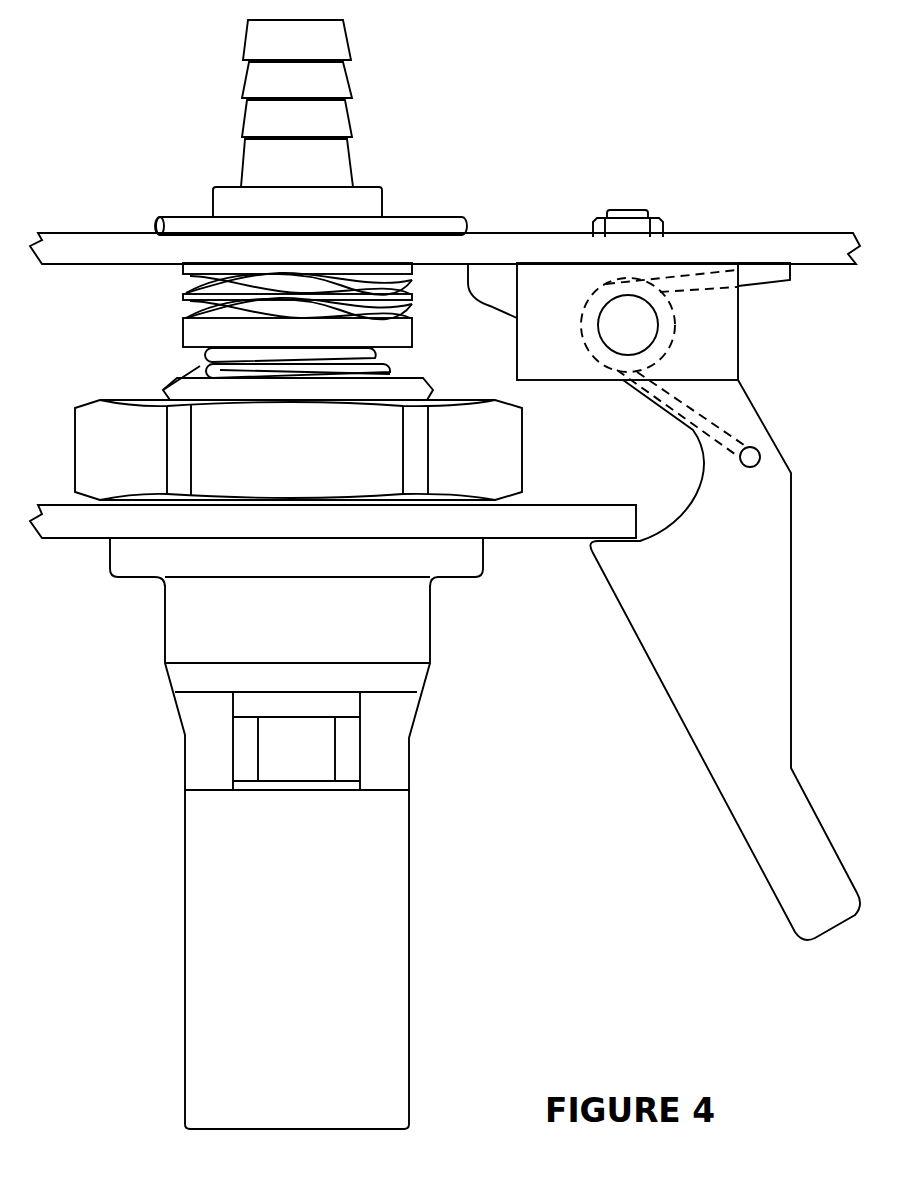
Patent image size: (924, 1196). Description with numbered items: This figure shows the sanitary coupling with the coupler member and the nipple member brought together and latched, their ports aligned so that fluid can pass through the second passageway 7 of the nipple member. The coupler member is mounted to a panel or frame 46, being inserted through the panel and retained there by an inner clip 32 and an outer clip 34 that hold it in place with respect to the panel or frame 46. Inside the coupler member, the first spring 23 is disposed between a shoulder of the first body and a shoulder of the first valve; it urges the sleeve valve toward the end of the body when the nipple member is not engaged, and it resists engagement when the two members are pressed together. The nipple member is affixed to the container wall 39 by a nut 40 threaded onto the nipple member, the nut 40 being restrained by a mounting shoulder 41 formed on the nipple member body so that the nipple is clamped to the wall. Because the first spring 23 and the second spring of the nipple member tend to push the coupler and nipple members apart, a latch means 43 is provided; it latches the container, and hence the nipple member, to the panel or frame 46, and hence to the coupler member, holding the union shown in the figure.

The second passageway 7 is at (210, 752).
The first spring 23 is at (210, 353).
The inner clip 32 is at (417, 263).
The outer clip 34 is at (170, 220).
The container wall 39 is at (612, 519).
The nut 40 is at (222, 462).
The mounting shoulder 41 is at (447, 560).
The latch means 43 is at (694, 660).
The panel or frame 46 is at (560, 237).